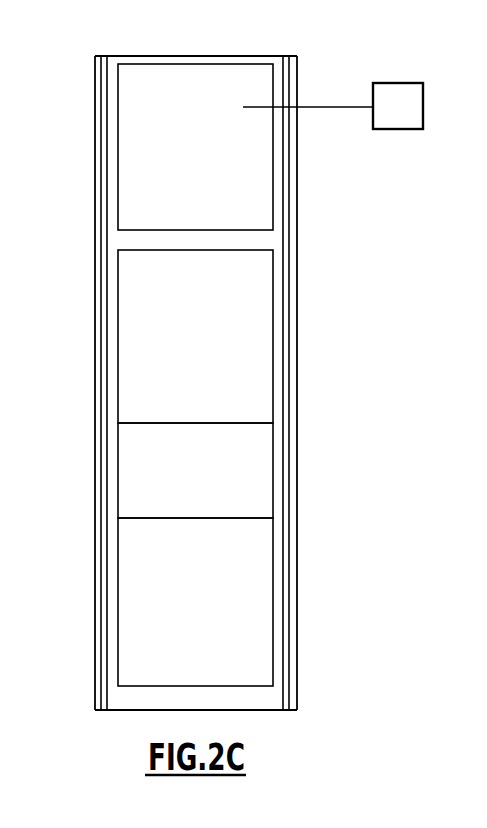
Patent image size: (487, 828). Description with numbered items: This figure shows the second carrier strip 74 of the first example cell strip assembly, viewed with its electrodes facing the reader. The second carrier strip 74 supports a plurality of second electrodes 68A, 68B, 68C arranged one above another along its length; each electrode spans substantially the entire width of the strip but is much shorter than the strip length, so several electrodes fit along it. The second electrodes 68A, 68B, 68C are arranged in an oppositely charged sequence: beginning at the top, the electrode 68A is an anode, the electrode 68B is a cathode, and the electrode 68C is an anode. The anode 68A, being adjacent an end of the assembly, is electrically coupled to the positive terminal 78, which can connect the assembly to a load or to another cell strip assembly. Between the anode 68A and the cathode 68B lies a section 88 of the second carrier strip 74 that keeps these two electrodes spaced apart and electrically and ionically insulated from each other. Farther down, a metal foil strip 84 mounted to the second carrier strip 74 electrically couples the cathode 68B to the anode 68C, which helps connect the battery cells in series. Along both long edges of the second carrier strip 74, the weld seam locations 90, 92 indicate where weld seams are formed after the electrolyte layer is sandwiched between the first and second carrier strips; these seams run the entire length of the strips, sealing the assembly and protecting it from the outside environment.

The second carrier strip 74 is at (247, 56).
The second electrode (anode) 68A is at (258, 87).
The second electrode (cathode) 68B is at (258, 353).
The second electrode (anode) 68C is at (258, 612).
The positive terminal 78 is at (425, 106).
The metal foil strip 84 is at (252, 492).
The section of second strip 88 is at (258, 242).
The weld seam location 90 is at (101, 475).
The weld seam location 92 is at (287, 563).